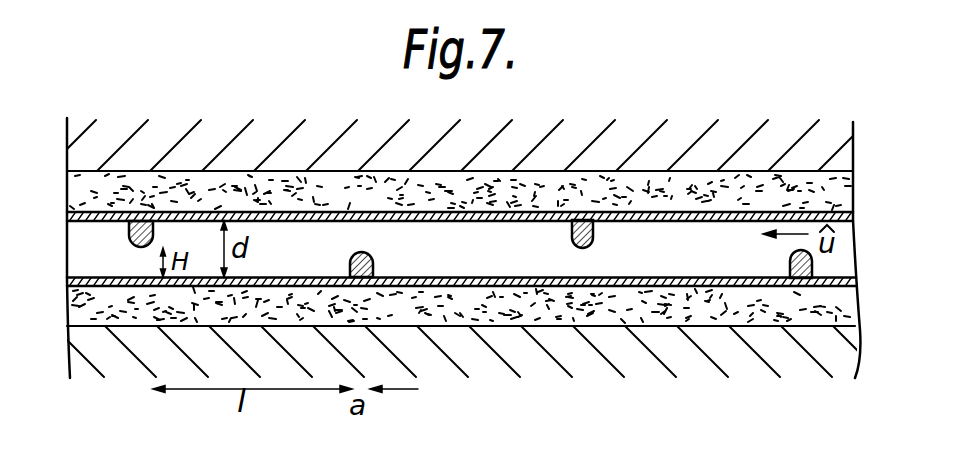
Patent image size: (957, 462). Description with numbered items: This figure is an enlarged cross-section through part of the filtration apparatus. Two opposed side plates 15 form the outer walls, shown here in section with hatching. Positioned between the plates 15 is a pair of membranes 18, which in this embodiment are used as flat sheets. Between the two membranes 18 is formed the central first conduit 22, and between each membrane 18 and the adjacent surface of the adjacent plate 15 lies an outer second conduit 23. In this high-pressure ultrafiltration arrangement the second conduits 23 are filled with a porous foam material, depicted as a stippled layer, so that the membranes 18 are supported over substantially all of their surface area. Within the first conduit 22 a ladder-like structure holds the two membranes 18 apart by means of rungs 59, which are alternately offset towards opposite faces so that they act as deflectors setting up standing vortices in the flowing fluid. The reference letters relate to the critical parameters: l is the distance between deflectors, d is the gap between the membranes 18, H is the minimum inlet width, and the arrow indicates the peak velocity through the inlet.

The side plate 15 is at (570, 145).
The membrane 18 is at (68, 212).
The first conduit 22 is at (85, 253).
The second conduit 23 is at (802, 190).
The rung 59 is at (373, 260).